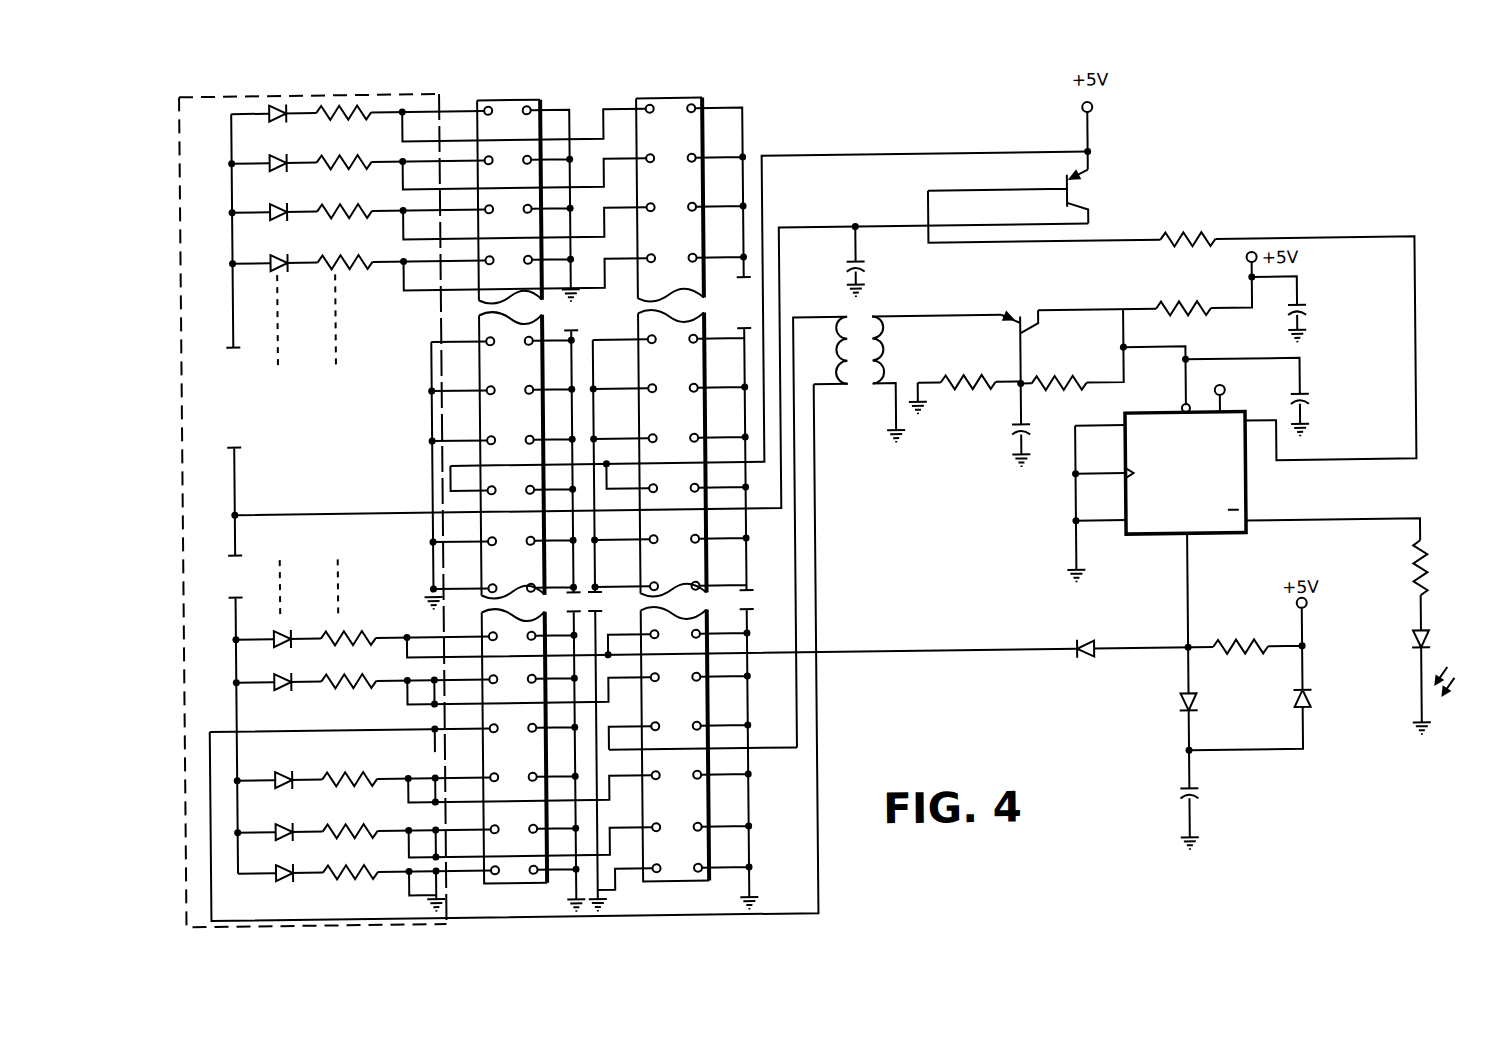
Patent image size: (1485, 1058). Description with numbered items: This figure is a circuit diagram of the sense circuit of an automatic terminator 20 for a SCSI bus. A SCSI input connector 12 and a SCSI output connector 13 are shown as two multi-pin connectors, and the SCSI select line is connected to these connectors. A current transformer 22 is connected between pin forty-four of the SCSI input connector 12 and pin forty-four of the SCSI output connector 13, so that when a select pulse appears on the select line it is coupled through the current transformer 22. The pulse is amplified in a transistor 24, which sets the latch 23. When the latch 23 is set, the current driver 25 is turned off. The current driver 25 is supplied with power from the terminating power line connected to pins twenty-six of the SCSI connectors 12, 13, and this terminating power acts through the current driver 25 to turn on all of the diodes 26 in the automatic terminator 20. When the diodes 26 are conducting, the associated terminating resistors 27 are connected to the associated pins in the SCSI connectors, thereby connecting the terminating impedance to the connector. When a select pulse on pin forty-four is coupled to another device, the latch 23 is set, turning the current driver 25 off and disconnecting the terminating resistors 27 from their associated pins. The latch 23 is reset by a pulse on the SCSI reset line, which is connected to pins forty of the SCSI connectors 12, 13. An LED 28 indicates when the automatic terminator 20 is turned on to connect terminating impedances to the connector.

The SCSI input connector 12 is at (546, 98).
The SCSI output connector 13 is at (708, 98).
The automatic terminator 20 is at (340, 92).
The current transformer 22 is at (864, 385).
The latch 23 is at (1233, 466).
The transistor 24 is at (1034, 341).
The current driver 25 is at (1064, 192).
The diodes 26 is at (282, 117).
The terminating resistors 27 is at (369, 158).
The LED 28 is at (1428, 636).